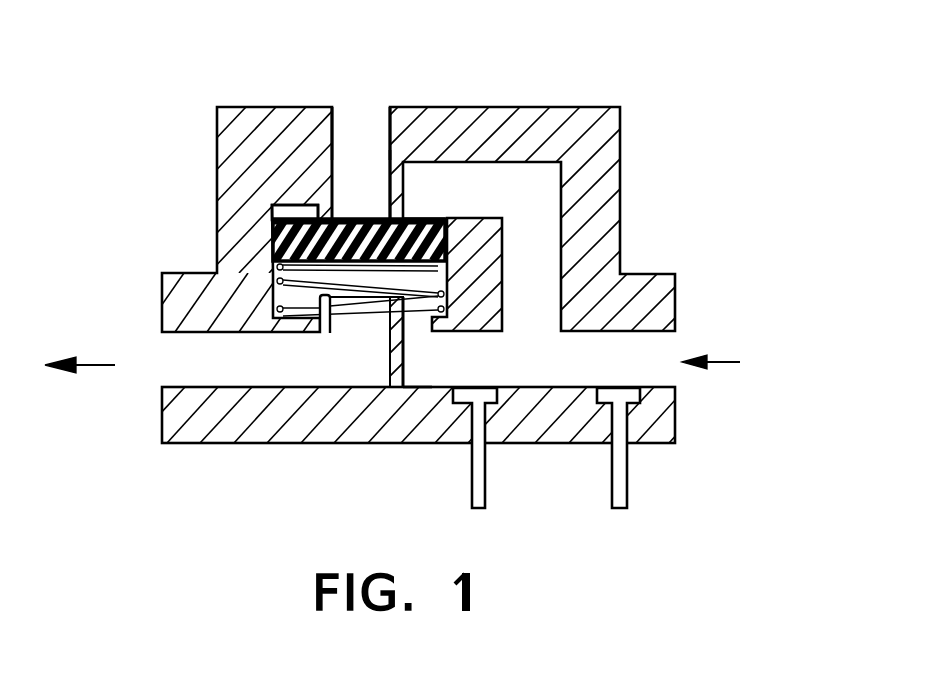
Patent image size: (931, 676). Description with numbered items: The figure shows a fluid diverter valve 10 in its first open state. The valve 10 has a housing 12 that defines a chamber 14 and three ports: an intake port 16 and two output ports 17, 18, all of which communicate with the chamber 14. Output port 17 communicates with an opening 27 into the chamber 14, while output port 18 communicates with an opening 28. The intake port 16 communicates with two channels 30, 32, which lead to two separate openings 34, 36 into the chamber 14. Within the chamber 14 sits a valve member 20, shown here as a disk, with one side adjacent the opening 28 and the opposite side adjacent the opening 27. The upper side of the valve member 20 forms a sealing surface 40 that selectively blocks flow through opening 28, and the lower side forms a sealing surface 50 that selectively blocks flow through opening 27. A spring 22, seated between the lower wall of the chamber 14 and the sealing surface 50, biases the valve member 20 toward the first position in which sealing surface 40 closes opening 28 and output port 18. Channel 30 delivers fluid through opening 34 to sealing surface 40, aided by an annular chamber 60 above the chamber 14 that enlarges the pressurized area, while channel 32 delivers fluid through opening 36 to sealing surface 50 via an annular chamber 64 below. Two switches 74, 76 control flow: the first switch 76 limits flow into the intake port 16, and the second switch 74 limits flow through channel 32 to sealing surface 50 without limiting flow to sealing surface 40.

The valve 10 is at (665, 84).
The housing 12 is at (205, 98).
The chamber 14 is at (343, 290).
The intake port 16 is at (670, 370).
The output port 17 is at (163, 373).
The output port 18 is at (363, 108).
The valve member 20 is at (292, 212).
The spring 22 is at (447, 295).
The opening 27 is at (362, 305).
The opening 28 is at (381, 205).
The channel 30 is at (536, 199).
The channel 32 is at (466, 374).
The opening 34 is at (423, 215).
The opening 36 is at (423, 323).
The sealing surface 40 is at (347, 197).
The sealing surface 50 is at (372, 262).
The annular chamber 60 is at (338, 226).
The annular chamber 64 is at (290, 300).
The switch 74 is at (473, 487).
The switch 76 is at (617, 493).